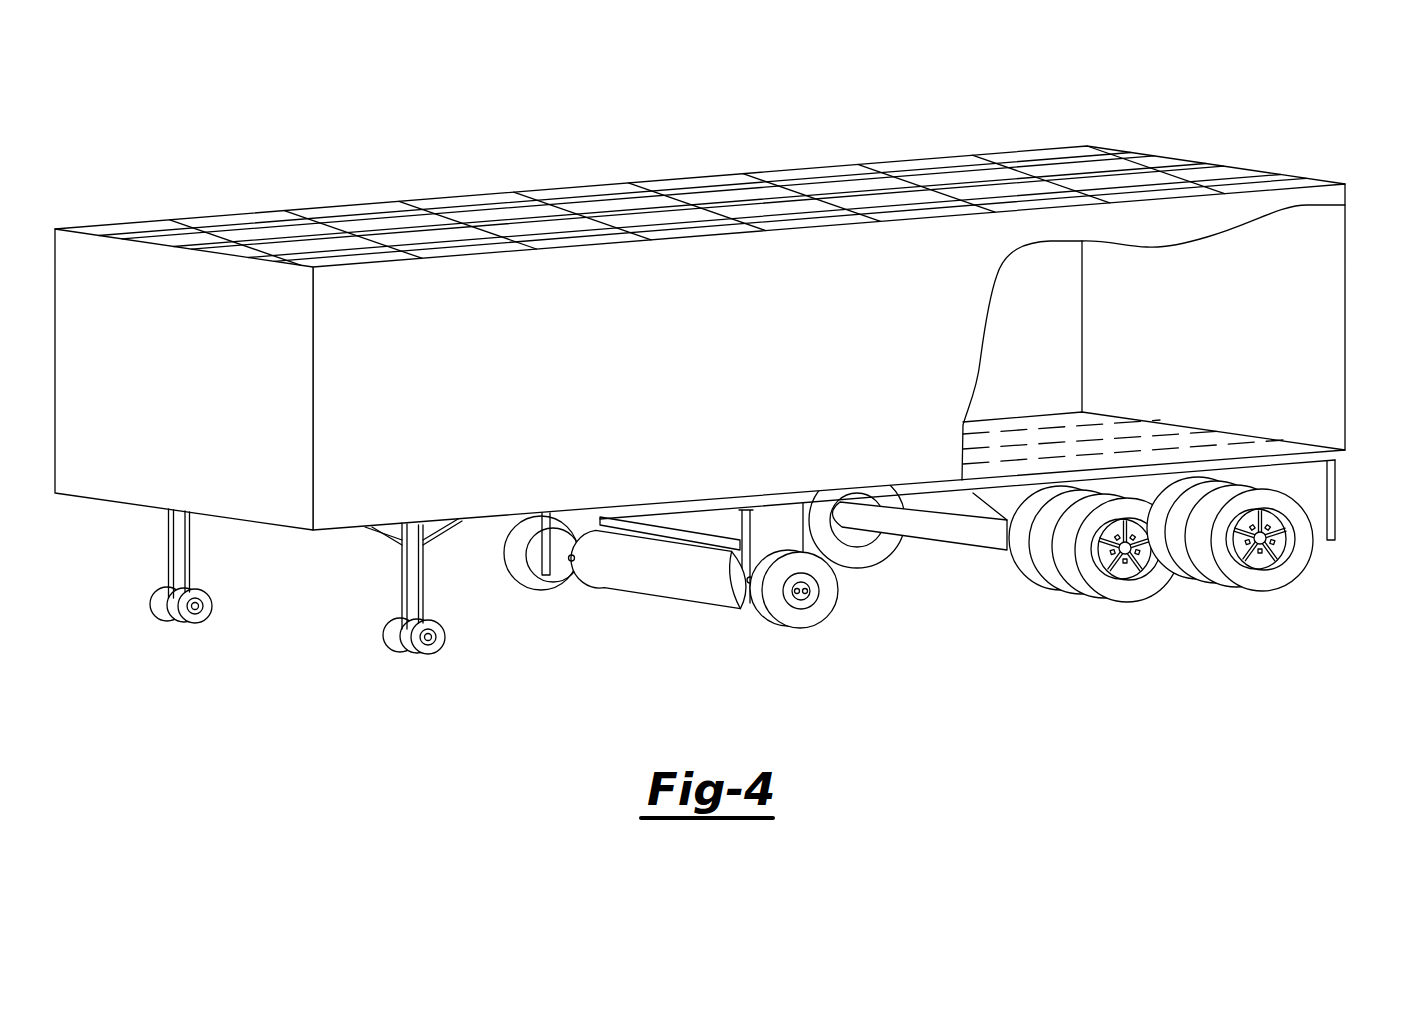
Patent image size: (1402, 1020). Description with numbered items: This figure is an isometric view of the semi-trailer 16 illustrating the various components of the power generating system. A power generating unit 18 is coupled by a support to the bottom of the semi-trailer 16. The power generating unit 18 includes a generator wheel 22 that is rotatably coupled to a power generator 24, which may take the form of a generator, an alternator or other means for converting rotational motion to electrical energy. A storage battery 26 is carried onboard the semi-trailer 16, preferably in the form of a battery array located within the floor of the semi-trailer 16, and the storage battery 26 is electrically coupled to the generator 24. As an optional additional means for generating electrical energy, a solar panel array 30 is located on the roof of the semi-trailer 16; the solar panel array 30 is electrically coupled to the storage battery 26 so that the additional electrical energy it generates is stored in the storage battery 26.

The semi-trailer 16 is at (700, 373).
The solar panel array 30 is at (513, 228).
The storage battery 26 is at (1228, 451).
The power generator 24 is at (637, 585).
The power generating unit 18 is at (718, 602).
The generator wheel 22 is at (842, 592).